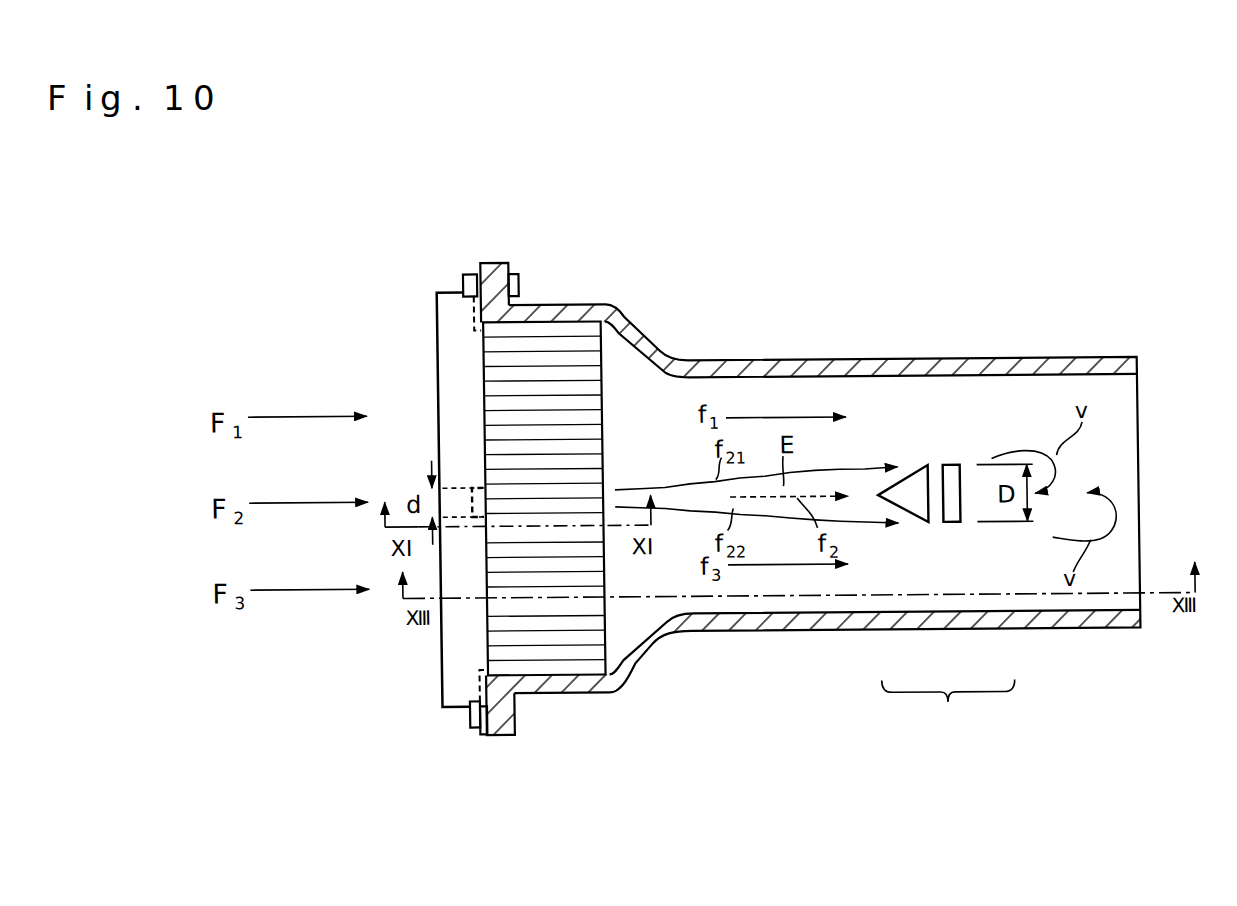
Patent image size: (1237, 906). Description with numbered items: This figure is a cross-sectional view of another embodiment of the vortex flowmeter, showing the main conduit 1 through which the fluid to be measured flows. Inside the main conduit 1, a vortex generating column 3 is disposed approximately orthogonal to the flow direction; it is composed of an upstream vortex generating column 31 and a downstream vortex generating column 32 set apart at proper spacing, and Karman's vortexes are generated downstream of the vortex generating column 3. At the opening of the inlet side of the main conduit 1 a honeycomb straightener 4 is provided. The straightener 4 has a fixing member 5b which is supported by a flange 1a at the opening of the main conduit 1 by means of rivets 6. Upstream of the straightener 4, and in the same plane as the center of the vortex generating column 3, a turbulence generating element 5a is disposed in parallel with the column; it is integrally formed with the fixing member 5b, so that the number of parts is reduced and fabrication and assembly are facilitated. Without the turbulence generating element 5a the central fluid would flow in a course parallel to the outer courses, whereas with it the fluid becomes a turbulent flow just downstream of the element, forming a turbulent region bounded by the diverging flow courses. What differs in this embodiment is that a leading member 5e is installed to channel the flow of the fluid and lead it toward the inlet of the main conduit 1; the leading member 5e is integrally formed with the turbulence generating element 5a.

The main conduit 1 is at (772, 359).
The flange 1a is at (509, 798).
The vortex generating column 3 is at (949, 708).
The honeycomb straightener 4 is at (562, 328).
The turbulence generating element 5a is at (478, 471).
The fixing member 5b is at (458, 792).
The leading member 5e is at (440, 645).
The rivets 6 is at (520, 272).
The upstream vortex generating column 31 is at (924, 524).
The downstream vortex generating column 32 is at (958, 524).